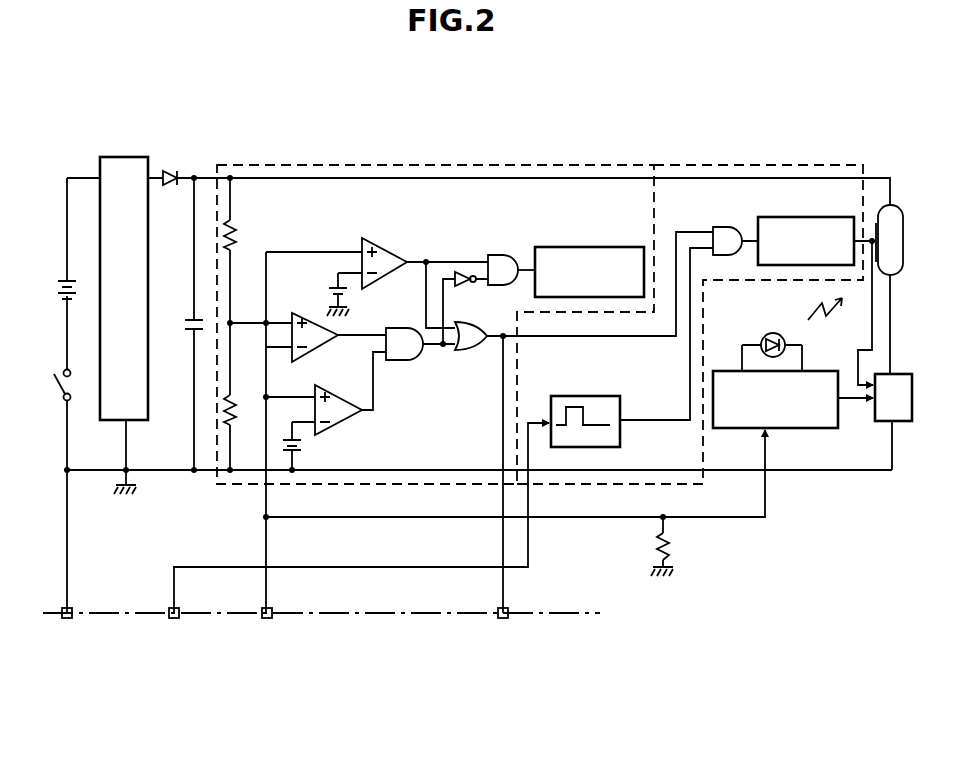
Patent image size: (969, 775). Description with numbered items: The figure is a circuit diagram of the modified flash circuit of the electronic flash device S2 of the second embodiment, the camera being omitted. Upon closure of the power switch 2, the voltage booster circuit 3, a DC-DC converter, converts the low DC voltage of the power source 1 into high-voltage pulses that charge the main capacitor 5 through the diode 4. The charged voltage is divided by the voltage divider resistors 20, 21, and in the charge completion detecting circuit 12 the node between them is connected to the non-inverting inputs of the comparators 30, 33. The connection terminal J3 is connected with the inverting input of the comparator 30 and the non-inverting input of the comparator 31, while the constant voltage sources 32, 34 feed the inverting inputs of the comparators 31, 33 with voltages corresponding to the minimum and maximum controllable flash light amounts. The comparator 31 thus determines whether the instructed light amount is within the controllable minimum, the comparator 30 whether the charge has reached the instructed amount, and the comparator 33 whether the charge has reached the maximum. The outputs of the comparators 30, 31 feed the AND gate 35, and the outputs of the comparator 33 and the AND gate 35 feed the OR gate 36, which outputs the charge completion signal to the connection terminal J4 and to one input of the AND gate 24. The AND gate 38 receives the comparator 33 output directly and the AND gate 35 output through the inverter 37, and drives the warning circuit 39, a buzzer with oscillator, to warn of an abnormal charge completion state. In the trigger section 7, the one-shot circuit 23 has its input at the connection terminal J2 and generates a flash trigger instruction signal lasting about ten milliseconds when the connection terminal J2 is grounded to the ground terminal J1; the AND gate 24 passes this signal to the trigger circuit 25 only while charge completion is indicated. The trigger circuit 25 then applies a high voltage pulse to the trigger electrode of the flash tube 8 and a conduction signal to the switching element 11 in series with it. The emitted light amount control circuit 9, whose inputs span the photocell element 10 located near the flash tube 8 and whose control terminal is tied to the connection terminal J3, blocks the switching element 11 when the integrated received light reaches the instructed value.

The power source 1 is at (62, 292).
The power switch 2 is at (61, 390).
The voltage booster circuit 3 is at (151, 387).
The diode 4 is at (170, 171).
The main capacitor 5 is at (192, 330).
The trigger section 7 is at (719, 164).
The flash tube 8 is at (903, 216).
The emitted light amount control circuit 9 is at (786, 429).
The photocell element 10 is at (766, 336).
The switching element 11 is at (907, 374).
The charge completion detecting circuit 12 is at (330, 164).
The voltage dividing resistor 20 is at (235, 236).
The voltage dividing resistor 21 is at (237, 409).
The one-shot circuit 23 is at (590, 396).
The AND gate 24 is at (727, 227).
The trigger circuit 25 is at (812, 215).
The comparator 30 is at (320, 346).
The comparator 31 is at (350, 418).
The constant voltage source 32 is at (301, 445).
The comparator 33 is at (383, 278).
The constant voltage source 34 is at (337, 289).
The AND gate 35 is at (403, 361).
The OR gate 36 is at (468, 351).
The inverter 37 is at (463, 286).
The AND gate 38 is at (512, 255).
The warning circuit 39 is at (582, 247).
The ground terminal J1 is at (73, 607).
The connection terminal J2 is at (180, 607).
The connection terminal J3 is at (273, 607).
The connection terminal J4 is at (509, 607).
The electronic flash device S2 is at (731, 542).